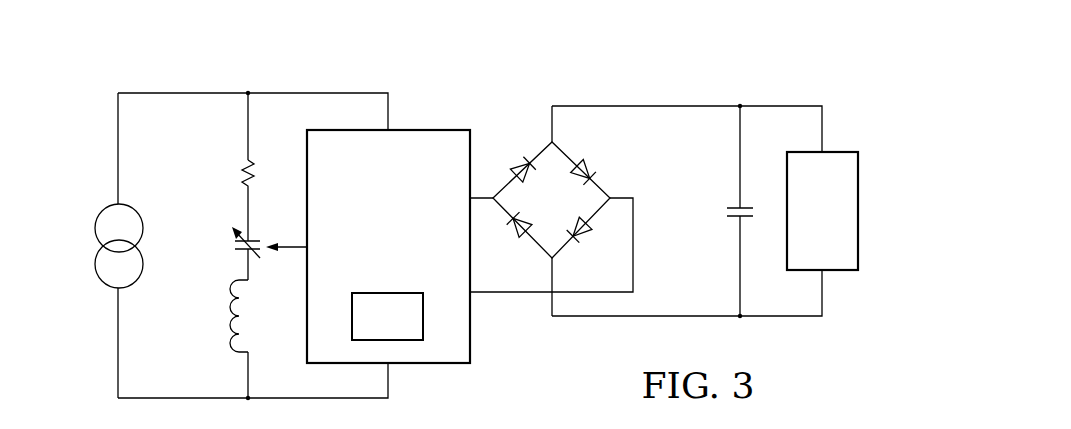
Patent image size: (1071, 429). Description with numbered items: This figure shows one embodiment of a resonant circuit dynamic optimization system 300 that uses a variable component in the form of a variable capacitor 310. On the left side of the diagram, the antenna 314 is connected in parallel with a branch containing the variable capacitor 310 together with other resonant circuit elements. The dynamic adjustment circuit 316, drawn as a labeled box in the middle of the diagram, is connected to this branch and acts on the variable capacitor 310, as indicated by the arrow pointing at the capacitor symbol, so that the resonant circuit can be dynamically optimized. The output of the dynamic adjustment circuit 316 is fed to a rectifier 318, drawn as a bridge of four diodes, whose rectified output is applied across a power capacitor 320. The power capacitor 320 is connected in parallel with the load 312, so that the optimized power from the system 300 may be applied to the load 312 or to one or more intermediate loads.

The resonant circuit dynamic optimization system 300 is at (724, 68).
The variable capacitor 310 is at (233, 246).
The load 312 is at (859, 212).
The antenna 314 is at (96, 230).
The dynamic adjustment circuit 316 is at (422, 130).
The rectifier 318 is at (534, 146).
The power capacitor 320 is at (727, 209).